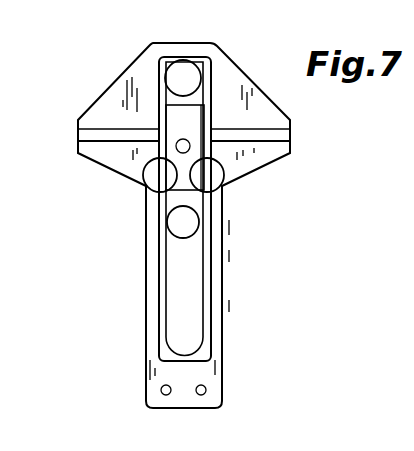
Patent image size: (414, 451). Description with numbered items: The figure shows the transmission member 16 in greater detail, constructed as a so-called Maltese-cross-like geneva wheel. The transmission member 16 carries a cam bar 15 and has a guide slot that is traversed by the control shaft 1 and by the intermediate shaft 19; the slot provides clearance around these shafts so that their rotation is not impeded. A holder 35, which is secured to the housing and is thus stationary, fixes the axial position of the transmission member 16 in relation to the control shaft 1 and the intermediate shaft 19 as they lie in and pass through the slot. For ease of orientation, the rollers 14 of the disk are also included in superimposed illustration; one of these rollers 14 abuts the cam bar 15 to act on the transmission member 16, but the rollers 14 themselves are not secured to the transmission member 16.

The control shaft 1 is at (180, 73).
The holder 35 is at (173, 110).
The cam bar 15 is at (88, 134).
The rollers 14 is at (210, 184).
The intermediate shaft 19 is at (182, 226).
The transmission member 16 is at (153, 319).